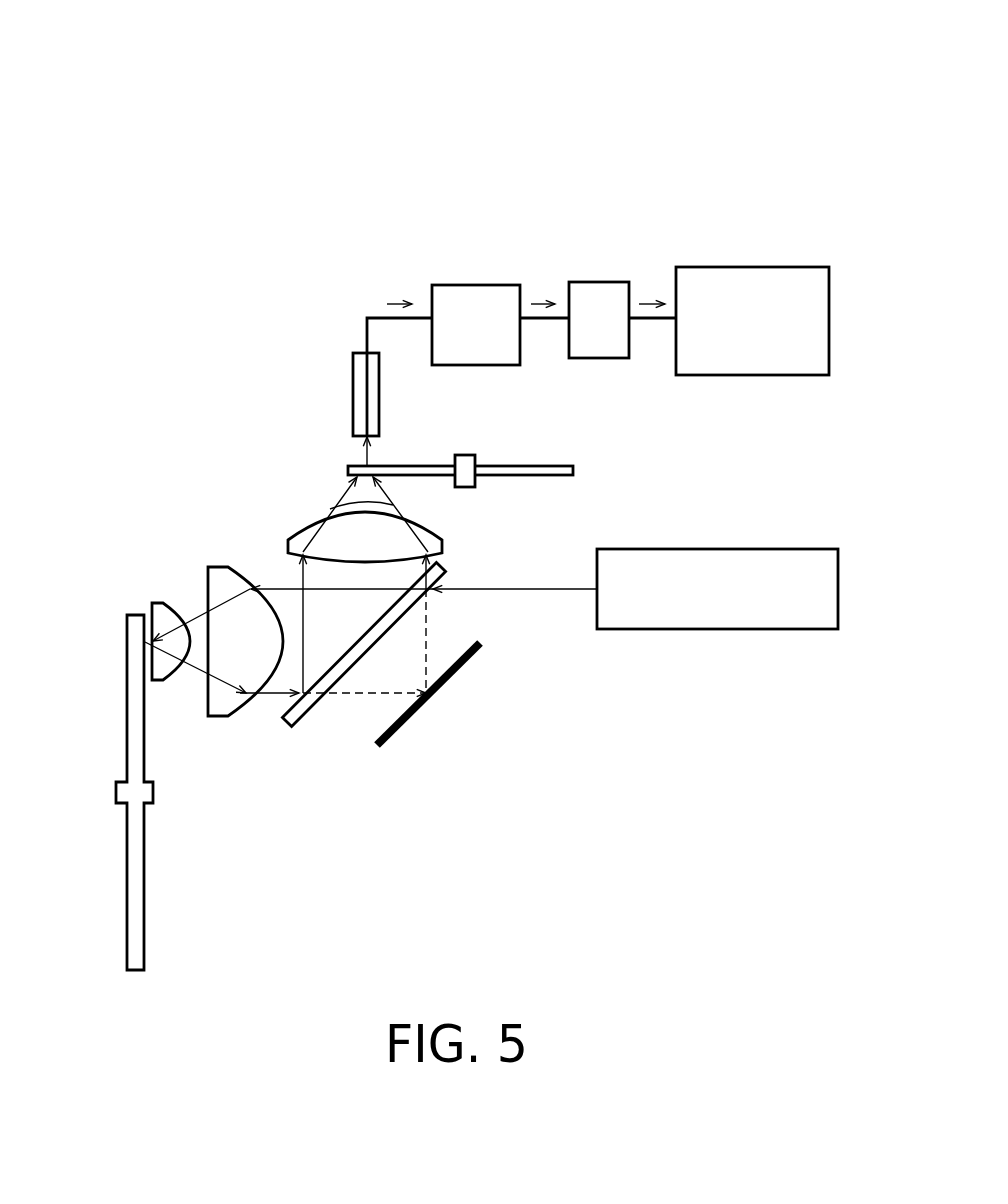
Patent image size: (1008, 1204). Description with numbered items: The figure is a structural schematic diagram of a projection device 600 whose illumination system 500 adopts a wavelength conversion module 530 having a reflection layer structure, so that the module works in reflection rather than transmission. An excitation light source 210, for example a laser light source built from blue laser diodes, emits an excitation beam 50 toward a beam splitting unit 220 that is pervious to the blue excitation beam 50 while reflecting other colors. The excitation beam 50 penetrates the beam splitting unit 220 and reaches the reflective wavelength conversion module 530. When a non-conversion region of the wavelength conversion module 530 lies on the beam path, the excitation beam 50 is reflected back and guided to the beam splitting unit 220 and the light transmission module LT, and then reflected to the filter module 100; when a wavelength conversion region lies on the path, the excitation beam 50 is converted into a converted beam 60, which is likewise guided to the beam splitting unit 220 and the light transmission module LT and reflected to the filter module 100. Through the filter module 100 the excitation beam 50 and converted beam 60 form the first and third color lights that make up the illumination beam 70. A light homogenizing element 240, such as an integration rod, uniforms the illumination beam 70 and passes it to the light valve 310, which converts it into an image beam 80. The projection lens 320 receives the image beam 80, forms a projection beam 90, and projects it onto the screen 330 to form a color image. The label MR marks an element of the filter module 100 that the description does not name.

The projection device 600 is at (603, 72).
The illumination system 500 is at (172, 290).
The illumination beam 70 is at (396, 300).
The image beam 80 is at (537, 300).
The projection beam 90 is at (645, 300).
The light valve 310 is at (475, 285).
The projection lens 320 is at (597, 282).
The screen 330 is at (750, 267).
The light homogenizing element 240 is at (355, 375).
The filter module 100 is at (575, 470).
The micro-mirror MR is at (465, 455).
The excitation beam 50 is at (515, 588).
The converted beam 60 is at (330, 506).
The excitation light source 210 is at (717, 549).
The beam splitting unit 220 is at (300, 724).
The light transmission module LT is at (475, 650).
The wavelength conversion module 530 is at (135, 615).